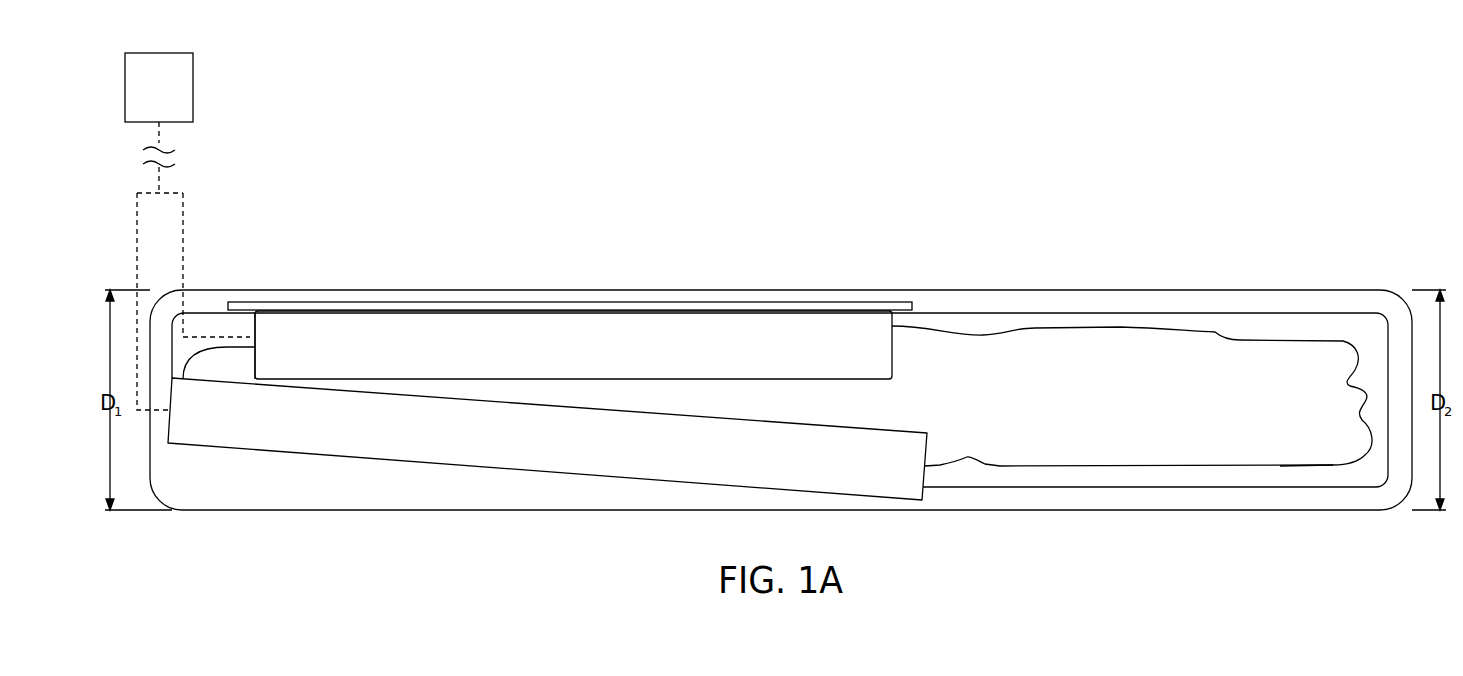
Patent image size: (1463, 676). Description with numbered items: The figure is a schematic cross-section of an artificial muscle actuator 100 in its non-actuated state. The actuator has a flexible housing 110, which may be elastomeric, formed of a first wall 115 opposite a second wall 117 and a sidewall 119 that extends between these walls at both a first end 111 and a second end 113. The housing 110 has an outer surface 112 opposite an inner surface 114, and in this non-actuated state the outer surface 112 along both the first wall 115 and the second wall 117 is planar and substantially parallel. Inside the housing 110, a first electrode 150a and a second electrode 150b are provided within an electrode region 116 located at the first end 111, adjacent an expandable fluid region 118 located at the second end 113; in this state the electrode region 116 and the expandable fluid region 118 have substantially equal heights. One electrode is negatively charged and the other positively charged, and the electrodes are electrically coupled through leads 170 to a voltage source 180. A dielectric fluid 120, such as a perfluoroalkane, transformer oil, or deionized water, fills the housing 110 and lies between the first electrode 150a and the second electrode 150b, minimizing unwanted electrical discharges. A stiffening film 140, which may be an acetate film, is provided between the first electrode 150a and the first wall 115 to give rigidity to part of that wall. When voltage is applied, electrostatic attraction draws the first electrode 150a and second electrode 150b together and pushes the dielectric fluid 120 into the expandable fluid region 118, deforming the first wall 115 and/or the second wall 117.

The artificial muscle actuator 100 is at (788, 368).
The housing 110 is at (788, 401).
The first end 111 is at (146, 465).
The outer surface 112 is at (975, 290).
The second end 113 is at (1418, 470).
The inner surface 114 is at (1048, 313).
The first wall 115 is at (1190, 240).
The electrode region 116 is at (573, 320).
The second wall 117 is at (781, 561).
The expandable fluid region 118 is at (777, 351).
The sidewall 119 is at (1422, 322).
The dielectric fluid 120 is at (1303, 455).
The stiffening film 140 is at (632, 302).
The first electrode 150a is at (243, 327).
The second electrode 150b is at (552, 490).
The leads 170 is at (137, 248).
The voltage source 180 is at (193, 88).